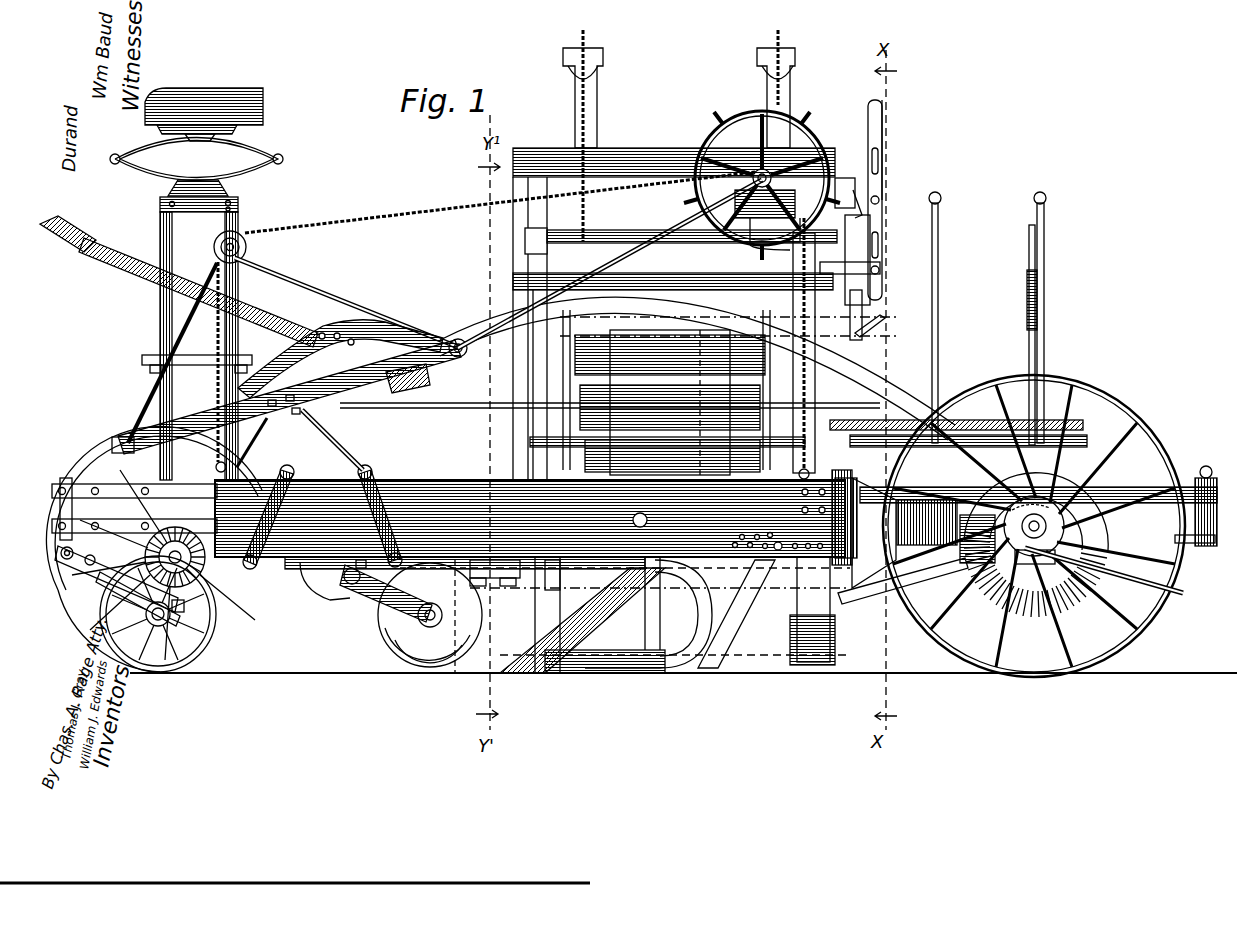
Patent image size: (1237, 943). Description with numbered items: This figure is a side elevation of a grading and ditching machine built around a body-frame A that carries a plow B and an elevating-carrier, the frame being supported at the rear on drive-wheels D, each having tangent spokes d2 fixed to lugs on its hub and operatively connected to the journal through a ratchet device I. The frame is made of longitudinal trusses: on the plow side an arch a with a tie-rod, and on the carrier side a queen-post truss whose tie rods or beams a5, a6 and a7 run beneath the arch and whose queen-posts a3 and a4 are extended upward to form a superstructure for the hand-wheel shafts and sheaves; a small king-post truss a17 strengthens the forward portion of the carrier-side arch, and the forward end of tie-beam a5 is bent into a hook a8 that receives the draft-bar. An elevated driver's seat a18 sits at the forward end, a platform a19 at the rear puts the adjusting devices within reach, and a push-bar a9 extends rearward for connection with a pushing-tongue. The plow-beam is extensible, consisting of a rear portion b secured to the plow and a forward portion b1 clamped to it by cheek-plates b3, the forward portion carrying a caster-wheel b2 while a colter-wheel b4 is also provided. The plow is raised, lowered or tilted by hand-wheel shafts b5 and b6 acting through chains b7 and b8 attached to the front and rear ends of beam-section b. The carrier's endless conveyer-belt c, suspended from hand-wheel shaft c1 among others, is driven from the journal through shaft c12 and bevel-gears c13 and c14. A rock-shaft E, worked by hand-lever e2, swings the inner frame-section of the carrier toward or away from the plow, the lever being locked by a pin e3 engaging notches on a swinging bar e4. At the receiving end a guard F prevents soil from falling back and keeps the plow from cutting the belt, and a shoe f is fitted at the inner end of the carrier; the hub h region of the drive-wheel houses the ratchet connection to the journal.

The driver's seat a18 is at (262, 102).
The chain b7 is at (362, 213).
The queen-post a3 is at (515, 250).
The hand-wheel shaft b5 is at (753, 173).
The hand-wheel shaft b6 is at (838, 192).
The conveyer-belt c is at (642, 350).
The hand-wheel shaft c1 is at (701, 330).
The queen-post a4 is at (822, 268).
The pin e3 is at (1028, 272).
The hand-lever e2 is at (1045, 212).
The swinging bar e4 is at (1029, 308).
The chain b8 is at (858, 334).
The arch a is at (533, 375).
The king-post truss a17 is at (325, 335).
The body-frame A is at (426, 366).
The platform a19 is at (1093, 397).
The drive-wheel D is at (1152, 428).
The tie-beam a6 is at (345, 444).
The forward beam portion b1 is at (270, 471).
The cheek-plates b3 is at (394, 472).
The rear beam portion b is at (483, 490).
The rock-shaft E is at (741, 443).
The shaft c12 is at (935, 522).
The bevel-gear c13 is at (977, 563).
The bevel-gear c14 is at (1103, 563).
The push-bar a9 is at (1192, 490).
The tangent spokes d2 is at (1143, 593).
The tie-beam a7 is at (858, 583).
The hub h is at (1012, 597).
The ratchet device I is at (1044, 590).
The caster-wheel b2 is at (215, 637).
The colter-wheel b4 is at (397, 640).
The tie-beam a5 is at (522, 584).
The hook a8 is at (453, 674).
The plow B is at (626, 623).
The shoe f is at (713, 653).
The guard F is at (740, 653).